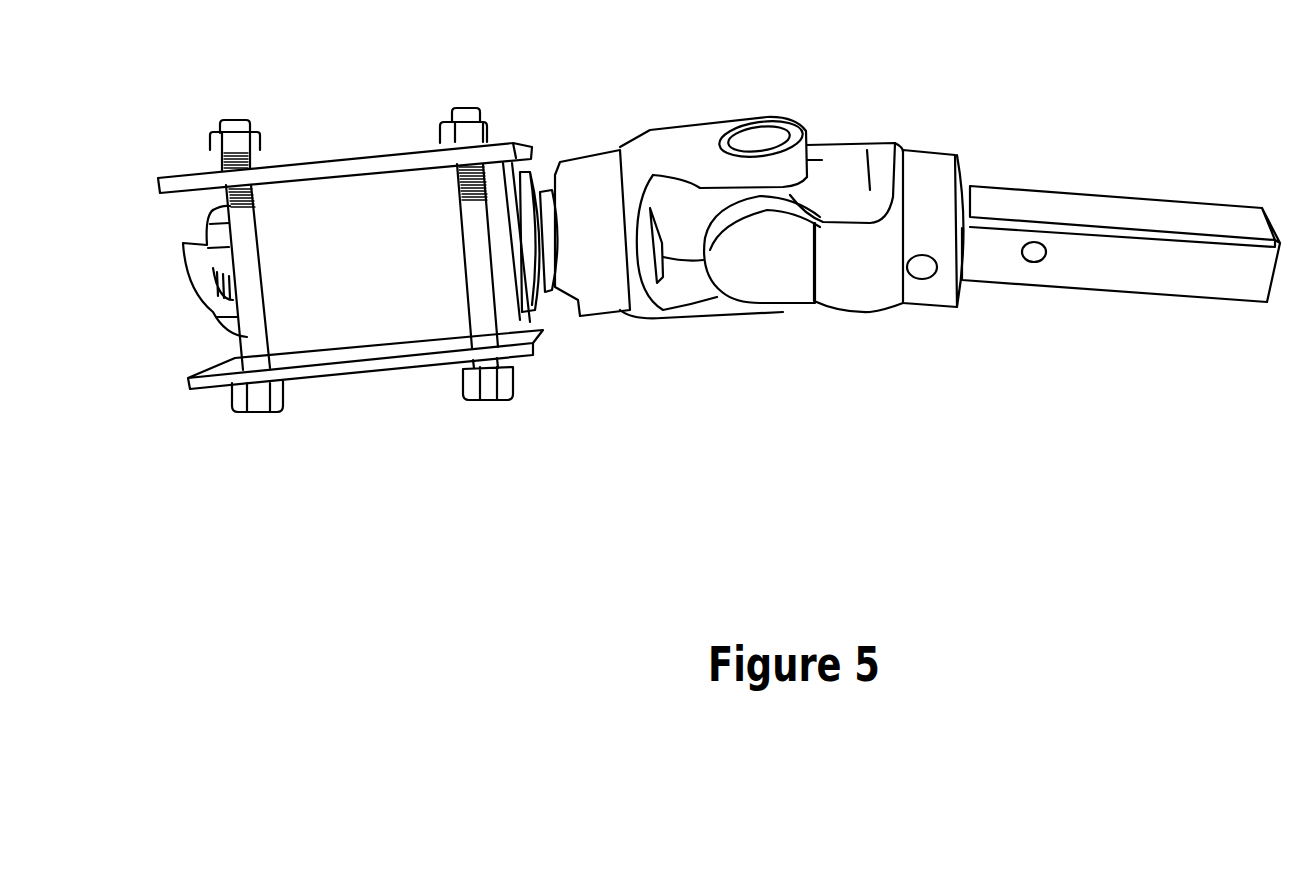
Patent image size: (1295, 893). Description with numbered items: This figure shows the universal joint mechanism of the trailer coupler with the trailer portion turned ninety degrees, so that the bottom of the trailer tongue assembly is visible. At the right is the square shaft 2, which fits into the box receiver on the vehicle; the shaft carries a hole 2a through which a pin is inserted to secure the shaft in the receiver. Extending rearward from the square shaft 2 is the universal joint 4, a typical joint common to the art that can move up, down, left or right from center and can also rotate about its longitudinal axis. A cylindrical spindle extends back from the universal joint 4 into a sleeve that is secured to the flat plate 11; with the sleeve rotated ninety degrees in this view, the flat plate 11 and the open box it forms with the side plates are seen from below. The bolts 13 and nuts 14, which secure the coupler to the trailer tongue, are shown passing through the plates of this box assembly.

The square shaft 2 is at (1121, 269).
The hole 2a is at (1030, 256).
The universal joint 4 is at (767, 182).
The flat plate 11 is at (348, 268).
The bolts 13 is at (268, 410).
The nuts 14 is at (438, 130).